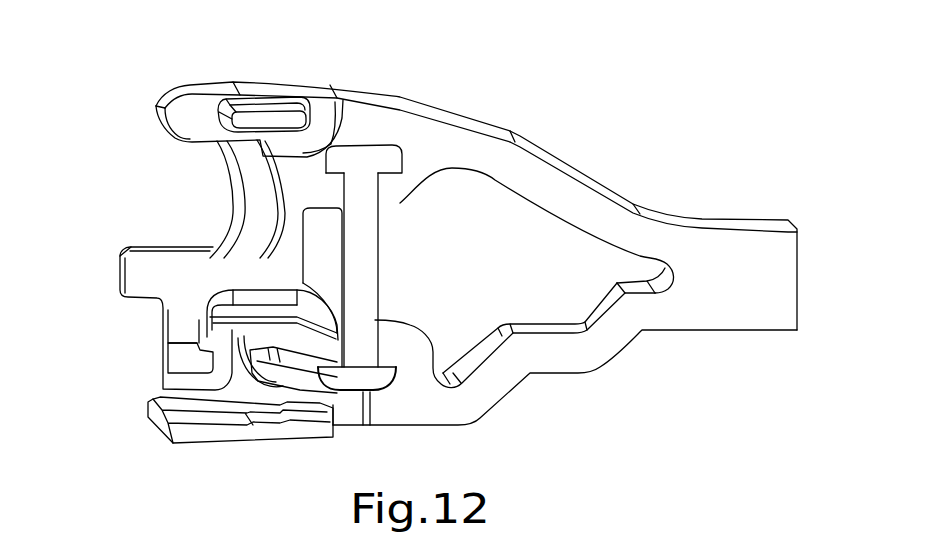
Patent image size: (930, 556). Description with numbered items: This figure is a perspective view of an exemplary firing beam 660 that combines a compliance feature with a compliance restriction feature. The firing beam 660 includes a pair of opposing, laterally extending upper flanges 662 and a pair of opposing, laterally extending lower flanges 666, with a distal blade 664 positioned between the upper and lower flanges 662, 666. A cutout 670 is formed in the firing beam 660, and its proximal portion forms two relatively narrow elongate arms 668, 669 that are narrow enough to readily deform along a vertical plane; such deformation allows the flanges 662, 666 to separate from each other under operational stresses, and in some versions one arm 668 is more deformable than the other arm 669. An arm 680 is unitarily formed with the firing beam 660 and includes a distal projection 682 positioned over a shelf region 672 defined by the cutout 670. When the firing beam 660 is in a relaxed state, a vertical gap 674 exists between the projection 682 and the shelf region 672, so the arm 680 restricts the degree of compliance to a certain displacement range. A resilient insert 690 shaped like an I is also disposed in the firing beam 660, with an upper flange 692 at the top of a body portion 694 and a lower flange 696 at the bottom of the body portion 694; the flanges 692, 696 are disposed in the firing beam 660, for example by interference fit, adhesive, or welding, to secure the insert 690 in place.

The firing beam 660 is at (148, 72).
The upper flanges 662 is at (270, 120).
The distal blade 664 is at (228, 213).
The lower flanges 666 is at (211, 437).
The elongate arm 668 is at (575, 203).
The elongate arm 669 is at (563, 362).
The cutout 670 is at (157, 389).
The shelf region 672 is at (233, 330).
The vertical gap 674 is at (195, 352).
The arm 680 is at (273, 297).
The distal projection 682 is at (210, 328).
The resilient insert 690 is at (370, 253).
The upper flange 692 is at (377, 150).
The body portion 694 is at (360, 286).
The lower flange 696 is at (377, 375).